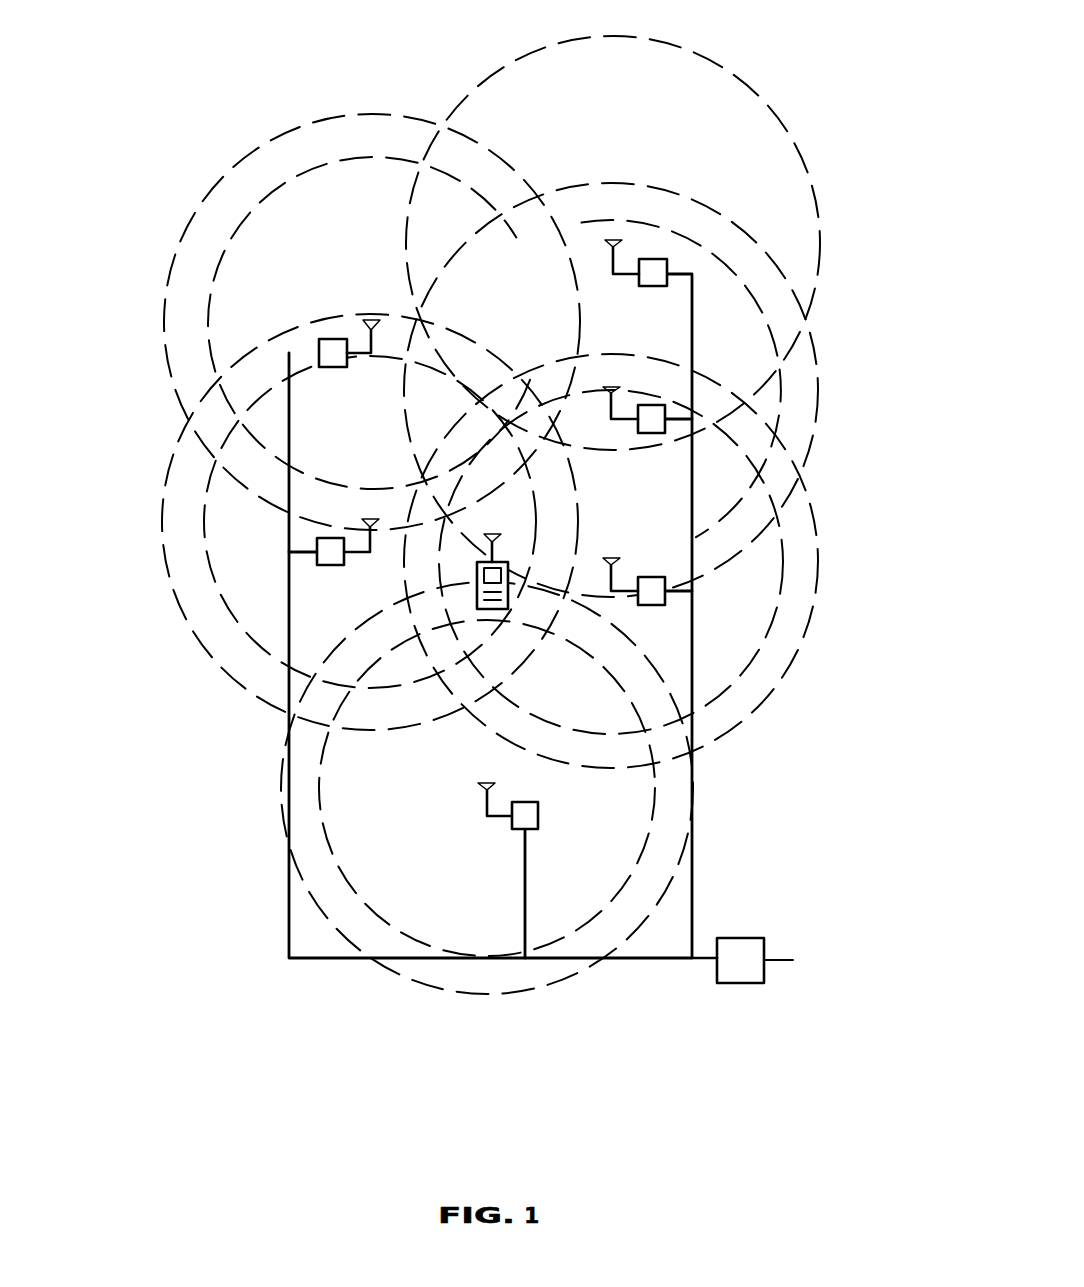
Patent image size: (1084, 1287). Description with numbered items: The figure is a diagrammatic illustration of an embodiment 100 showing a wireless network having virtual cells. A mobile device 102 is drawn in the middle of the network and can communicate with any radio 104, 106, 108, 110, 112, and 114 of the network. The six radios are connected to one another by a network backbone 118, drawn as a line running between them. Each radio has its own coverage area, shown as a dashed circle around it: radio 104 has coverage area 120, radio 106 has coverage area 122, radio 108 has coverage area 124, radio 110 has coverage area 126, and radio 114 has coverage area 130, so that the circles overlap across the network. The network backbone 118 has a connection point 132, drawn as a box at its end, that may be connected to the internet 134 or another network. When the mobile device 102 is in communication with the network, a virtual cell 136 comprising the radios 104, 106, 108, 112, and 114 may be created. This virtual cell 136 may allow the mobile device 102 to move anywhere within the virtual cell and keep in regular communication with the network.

The embodiment showing a wireless network having virtual cells 100 is at (501, 599).
The mobile device 102 is at (502, 609).
The radio 104 is at (332, 339).
The radio 106 is at (334, 565).
The radio 108 is at (512, 829).
The radio 110 is at (655, 259).
The radio 112 is at (648, 405).
The radio 114 is at (648, 577).
The network backbone 118 is at (692, 873).
The coverage area 120 is at (348, 109).
The coverage area 122 is at (166, 516).
The coverage area 124 is at (283, 781).
The coverage area 126 is at (820, 231).
The coverage area 130 is at (806, 620).
The connection point 132 is at (747, 938).
The internet 134 is at (840, 979).
The virtual cell 136 is at (775, 540).